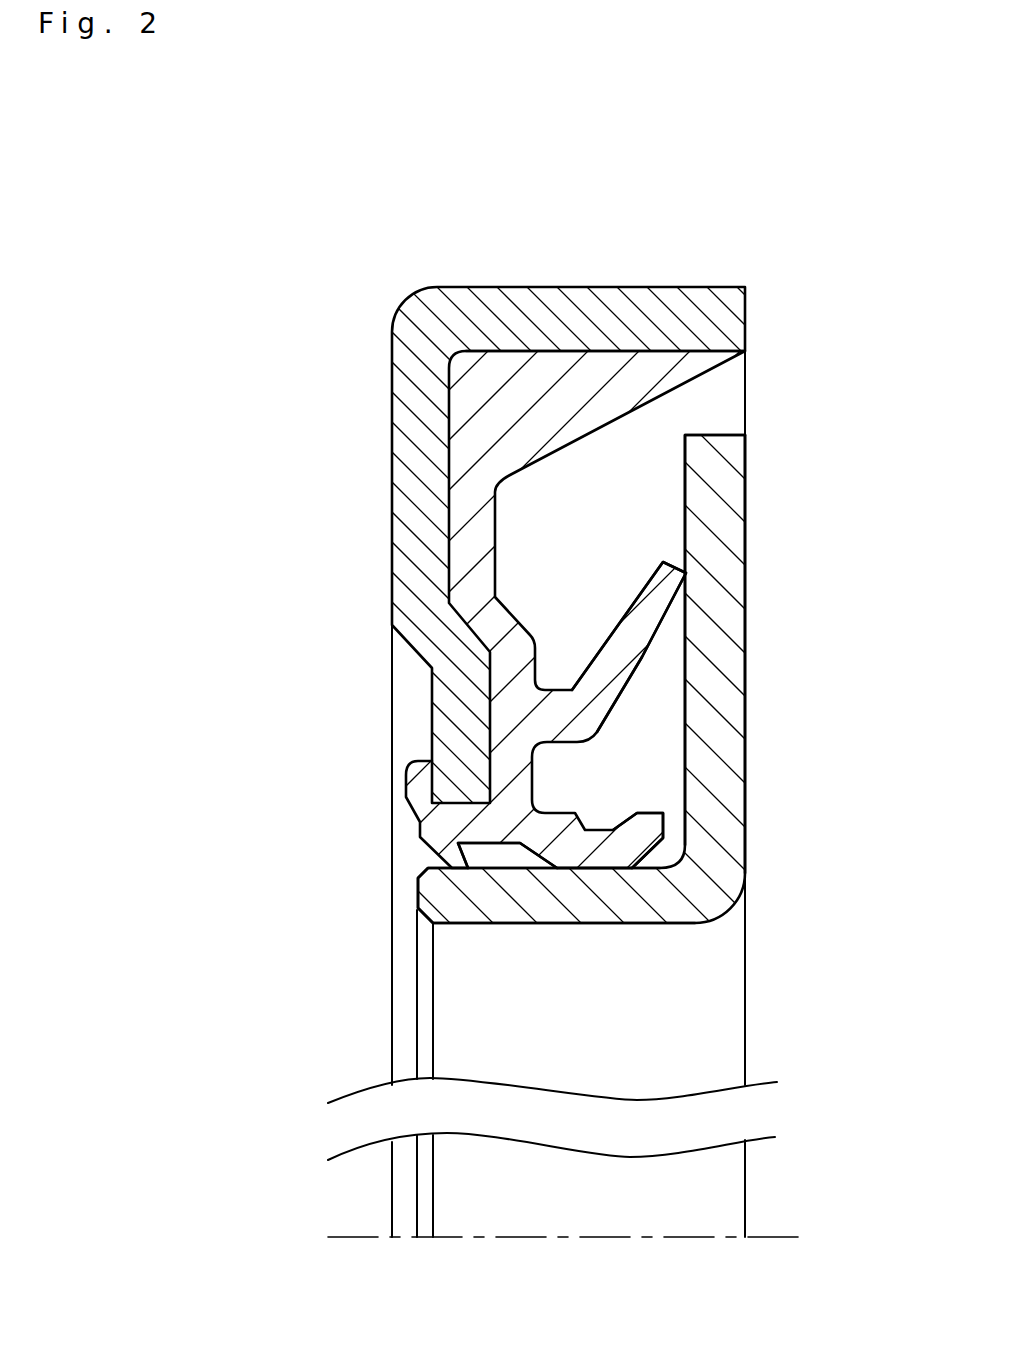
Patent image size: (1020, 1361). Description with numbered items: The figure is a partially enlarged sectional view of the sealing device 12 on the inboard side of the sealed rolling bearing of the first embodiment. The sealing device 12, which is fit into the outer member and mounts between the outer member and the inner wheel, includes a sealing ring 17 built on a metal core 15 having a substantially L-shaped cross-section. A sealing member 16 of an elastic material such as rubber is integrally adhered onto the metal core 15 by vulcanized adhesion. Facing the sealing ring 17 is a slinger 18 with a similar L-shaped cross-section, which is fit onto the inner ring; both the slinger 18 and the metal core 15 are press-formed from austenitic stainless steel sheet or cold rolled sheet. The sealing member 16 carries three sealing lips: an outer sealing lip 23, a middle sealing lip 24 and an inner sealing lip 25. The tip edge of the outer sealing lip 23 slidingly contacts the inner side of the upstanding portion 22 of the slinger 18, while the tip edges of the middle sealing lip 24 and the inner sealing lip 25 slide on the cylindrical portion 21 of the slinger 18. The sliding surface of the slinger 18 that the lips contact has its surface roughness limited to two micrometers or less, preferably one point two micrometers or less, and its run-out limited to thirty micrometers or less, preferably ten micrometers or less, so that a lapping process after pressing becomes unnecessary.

The sealing device 12 is at (783, 382).
The metal core 15 is at (478, 312).
The sealing member 16 is at (467, 507).
The sealing ring 17 is at (366, 298).
The slinger 18 is at (740, 482).
The cylindrical portion 21 is at (432, 910).
The upstanding portion 22 is at (728, 690).
The outer sealing lip 23 is at (677, 590).
The middle sealing lip 24 is at (645, 827).
The inner sealing lip 25 is at (497, 922).